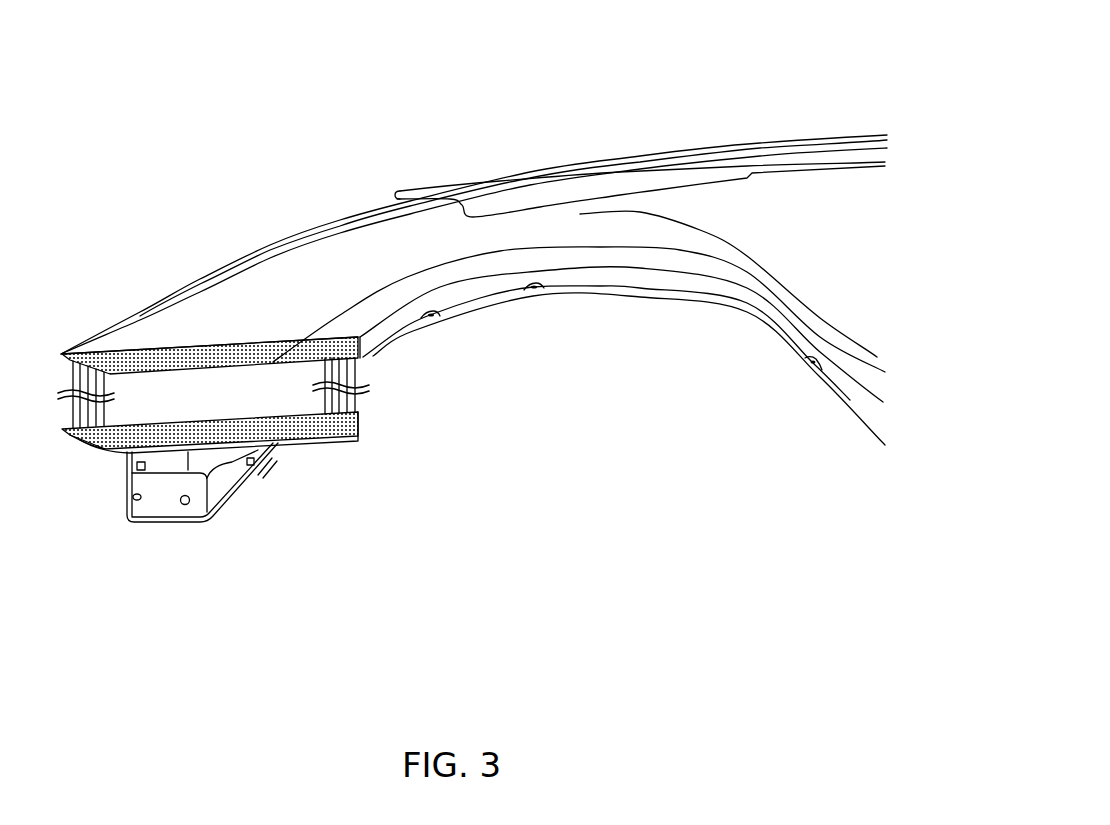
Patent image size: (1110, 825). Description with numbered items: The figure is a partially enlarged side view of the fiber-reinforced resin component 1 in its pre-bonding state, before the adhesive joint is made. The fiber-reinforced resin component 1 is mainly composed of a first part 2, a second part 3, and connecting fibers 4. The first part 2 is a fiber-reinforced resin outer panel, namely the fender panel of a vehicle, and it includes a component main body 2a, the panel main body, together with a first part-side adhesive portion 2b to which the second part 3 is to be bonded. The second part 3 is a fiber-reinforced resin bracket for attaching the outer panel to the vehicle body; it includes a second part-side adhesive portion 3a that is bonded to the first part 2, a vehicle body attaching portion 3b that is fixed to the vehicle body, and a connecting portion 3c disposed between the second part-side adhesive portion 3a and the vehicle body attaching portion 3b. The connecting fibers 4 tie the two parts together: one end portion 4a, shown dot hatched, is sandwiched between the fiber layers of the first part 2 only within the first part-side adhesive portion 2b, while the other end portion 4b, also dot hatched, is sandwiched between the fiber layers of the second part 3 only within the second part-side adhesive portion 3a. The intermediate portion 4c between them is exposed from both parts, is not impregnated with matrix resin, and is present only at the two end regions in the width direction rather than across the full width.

The fiber-reinforced resin component 1 is at (340, 107).
The first part 2 is at (417, 188).
The component main body 2a is at (275, 267).
The first part-side adhesive portion 2b is at (270, 353).
The second part 3 is at (143, 537).
The second part-side adhesive portion 3a is at (334, 423).
The vehicle body attaching portion 3b is at (198, 505).
The connecting portion 3c is at (258, 462).
The connecting fibers 4 is at (366, 368).
The one end portion of the connecting fibers 4a is at (138, 350).
The other end portion of the connecting fibers 4b is at (127, 453).
The intermediate portion of the connecting fibers 4c is at (68, 378).